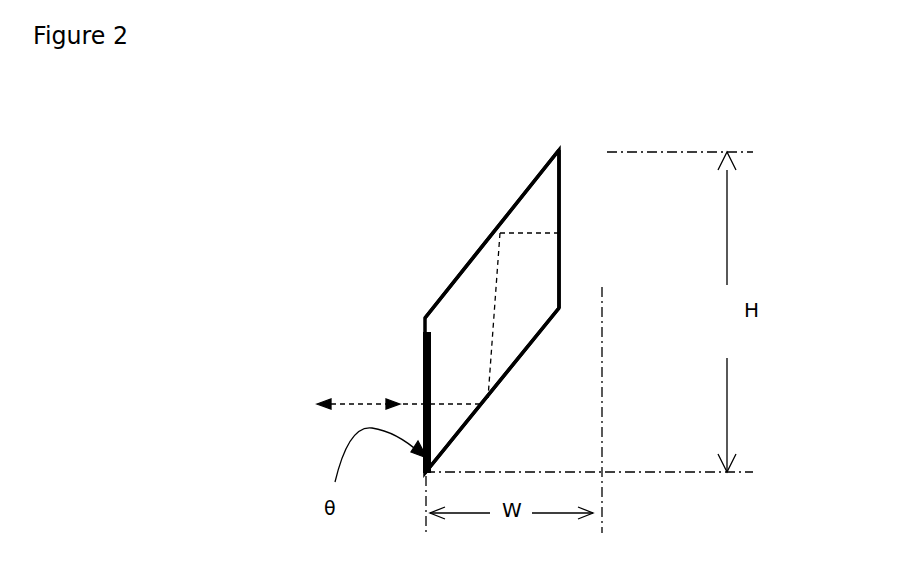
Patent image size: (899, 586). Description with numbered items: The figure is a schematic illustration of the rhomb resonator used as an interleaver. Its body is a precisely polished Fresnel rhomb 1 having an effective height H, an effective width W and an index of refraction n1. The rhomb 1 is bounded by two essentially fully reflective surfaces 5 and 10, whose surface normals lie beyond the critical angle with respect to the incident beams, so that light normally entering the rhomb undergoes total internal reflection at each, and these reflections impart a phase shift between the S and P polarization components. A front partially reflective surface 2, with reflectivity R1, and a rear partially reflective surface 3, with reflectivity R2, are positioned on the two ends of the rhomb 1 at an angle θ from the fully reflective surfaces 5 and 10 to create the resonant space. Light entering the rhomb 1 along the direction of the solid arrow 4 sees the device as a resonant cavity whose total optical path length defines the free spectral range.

The Fresnel rhomb 1 is at (462, 311).
The front partially reflective surface 2 is at (422, 345).
The rear partially reflective surface 3 is at (558, 215).
The solid arrow 4 is at (353, 405).
The fully reflective surface 5 is at (528, 348).
The fully reflective surface 10 is at (518, 197).